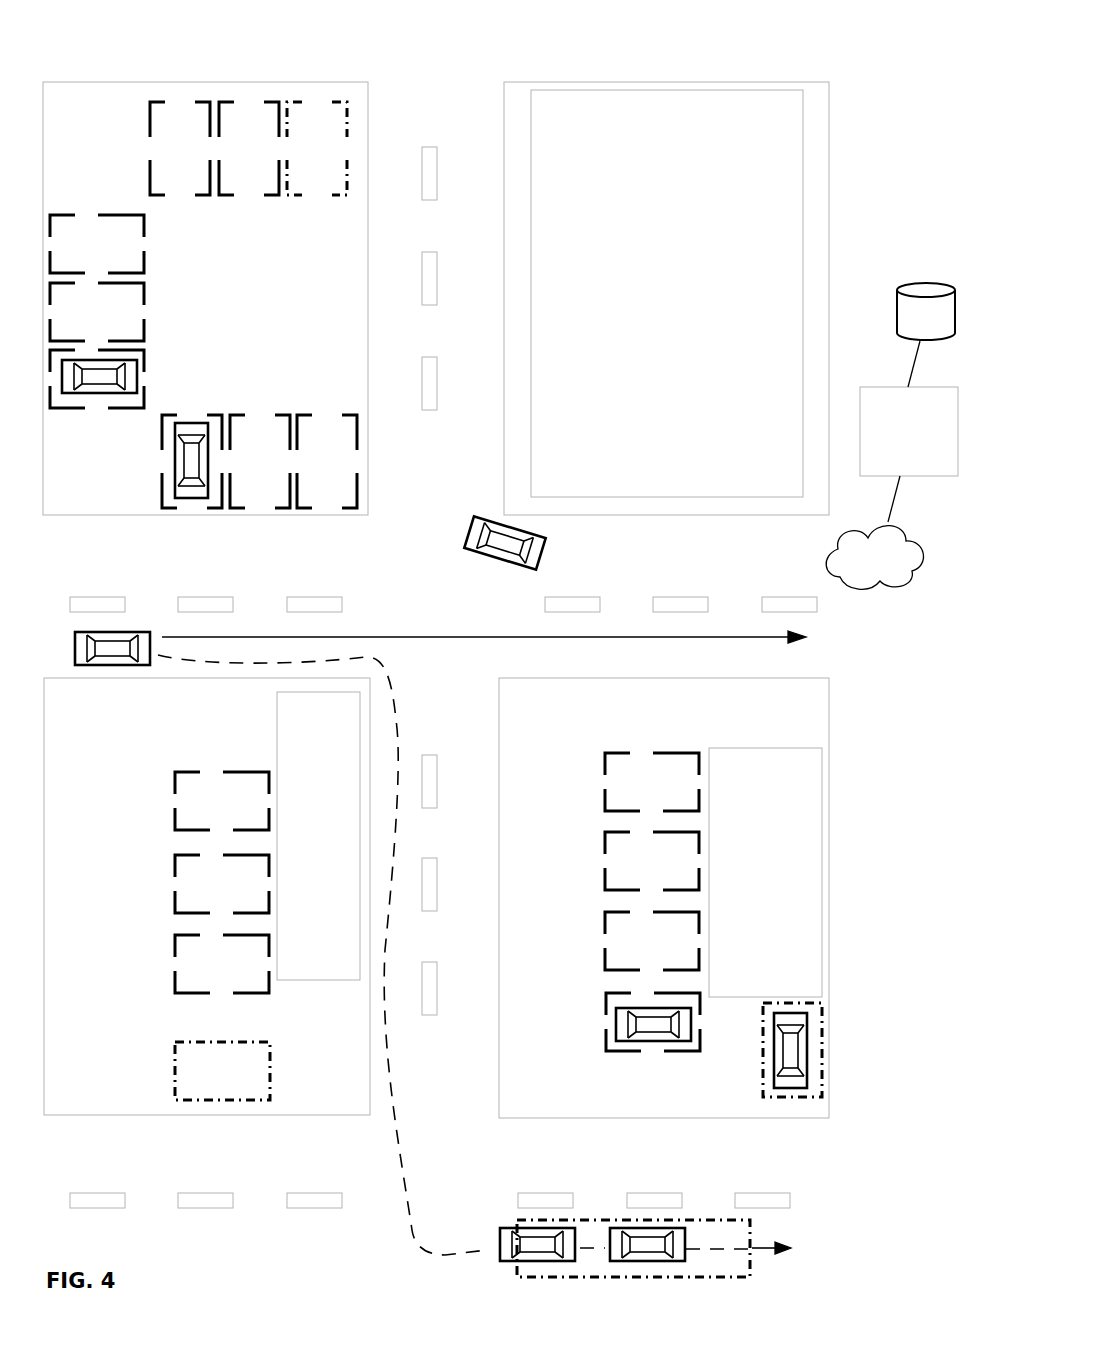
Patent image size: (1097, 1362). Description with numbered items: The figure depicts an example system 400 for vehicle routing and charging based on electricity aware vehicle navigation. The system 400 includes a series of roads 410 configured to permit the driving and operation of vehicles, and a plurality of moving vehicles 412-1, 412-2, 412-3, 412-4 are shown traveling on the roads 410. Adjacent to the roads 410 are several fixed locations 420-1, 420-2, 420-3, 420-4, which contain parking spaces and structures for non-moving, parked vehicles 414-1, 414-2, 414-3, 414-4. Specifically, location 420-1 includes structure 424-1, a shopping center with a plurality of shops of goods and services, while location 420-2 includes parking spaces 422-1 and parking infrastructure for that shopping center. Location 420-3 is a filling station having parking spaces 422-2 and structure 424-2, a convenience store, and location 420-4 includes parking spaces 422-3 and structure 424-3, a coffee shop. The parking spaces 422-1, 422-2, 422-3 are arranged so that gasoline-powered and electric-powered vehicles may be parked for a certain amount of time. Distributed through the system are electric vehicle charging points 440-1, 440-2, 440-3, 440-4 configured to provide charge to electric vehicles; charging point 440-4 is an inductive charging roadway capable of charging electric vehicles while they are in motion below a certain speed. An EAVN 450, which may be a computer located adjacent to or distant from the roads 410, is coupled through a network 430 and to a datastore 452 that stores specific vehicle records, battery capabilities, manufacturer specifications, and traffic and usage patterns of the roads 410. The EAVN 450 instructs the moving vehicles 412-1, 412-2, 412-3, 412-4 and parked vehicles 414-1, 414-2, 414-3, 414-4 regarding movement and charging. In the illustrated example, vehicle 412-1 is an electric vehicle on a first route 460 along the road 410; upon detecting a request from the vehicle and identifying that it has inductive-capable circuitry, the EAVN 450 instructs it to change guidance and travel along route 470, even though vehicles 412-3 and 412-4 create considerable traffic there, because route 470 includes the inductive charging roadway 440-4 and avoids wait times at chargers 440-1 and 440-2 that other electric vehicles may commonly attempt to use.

The system 400 is at (917, 50).
The roads 410 is at (473, 591).
The moving vehicle 412-1 is at (143, 634).
The moving vehicle 412-2 is at (547, 542).
The moving vehicle 412-3 is at (512, 1228).
The moving vehicle 412-4 is at (615, 1228).
The non-moving vehicle 414-1 is at (808, 1075).
The non-moving vehicle 414-2 is at (680, 1035).
The non-moving vehicle 414-3 is at (97, 382).
The non-moving vehicle 414-4 is at (192, 425).
The location 420-1 is at (512, 92).
The location 420-2 is at (205, 298).
The location 420-3 is at (207, 896).
The location 420-4 is at (664, 898).
The parking spaces 422-1 is at (263, 242).
The parking spaces 422-2 is at (178, 762).
The parking spaces 422-3 is at (625, 740).
The structure 424-1 is at (667, 293).
The structure 424-2 is at (318, 836).
The structure 424-3 is at (765, 872).
The network 430 is at (874, 558).
The electric vehicle charging point 440-1 is at (302, 103).
The electric vehicle charging point 440-2 is at (222, 1071).
The electric vehicle charging point 440-3 is at (816, 1008).
The electric vehicle charging point 440-4 is at (708, 1220).
The EAVN 450 is at (909, 431).
The datastore 452 is at (925, 286).
The first route 460 is at (477, 639).
The route 470 is at (410, 1167).